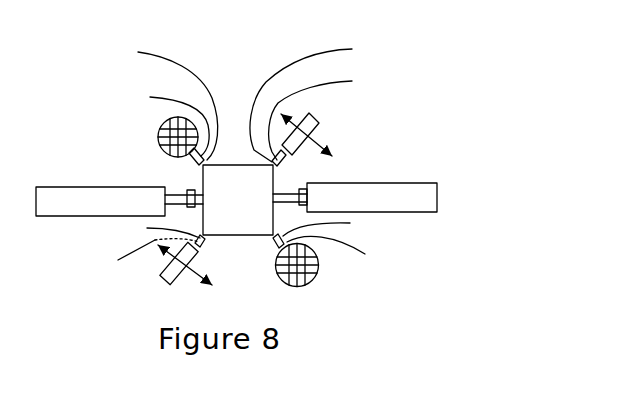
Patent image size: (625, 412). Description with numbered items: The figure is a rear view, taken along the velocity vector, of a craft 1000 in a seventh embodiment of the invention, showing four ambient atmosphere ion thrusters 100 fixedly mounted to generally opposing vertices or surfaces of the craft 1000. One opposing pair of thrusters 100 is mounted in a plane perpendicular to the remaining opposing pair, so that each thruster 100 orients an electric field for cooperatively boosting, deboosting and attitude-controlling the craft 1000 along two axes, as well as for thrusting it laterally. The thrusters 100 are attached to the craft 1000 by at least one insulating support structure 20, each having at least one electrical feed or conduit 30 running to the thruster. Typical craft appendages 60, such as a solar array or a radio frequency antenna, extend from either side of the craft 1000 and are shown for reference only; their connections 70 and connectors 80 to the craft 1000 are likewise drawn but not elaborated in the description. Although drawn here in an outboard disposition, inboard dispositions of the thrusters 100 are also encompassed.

The craft 1000 is at (258, 212).
The craft appendages 60 is at (109, 213).
The connection line 70 is at (181, 198).
The connector 80 is at (188, 193).
The ambient atmosphere ion thrusters 100 is at (156, 135).
The electrical feed (conduit) 30 is at (252, 157).
The insulating support structure 20 is at (254, 152).